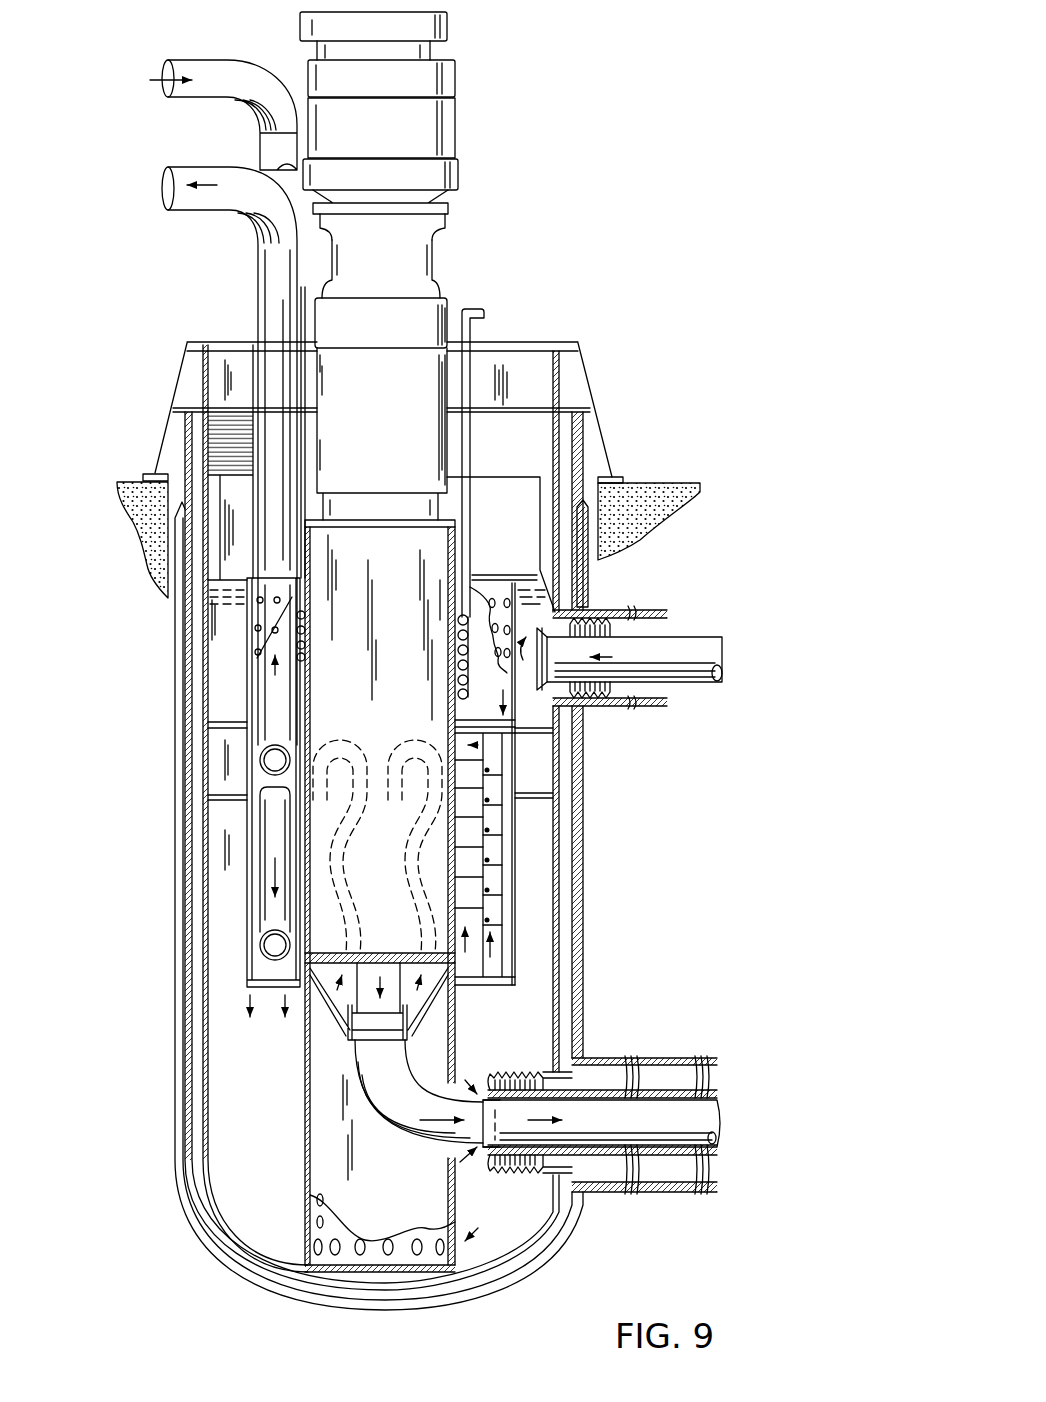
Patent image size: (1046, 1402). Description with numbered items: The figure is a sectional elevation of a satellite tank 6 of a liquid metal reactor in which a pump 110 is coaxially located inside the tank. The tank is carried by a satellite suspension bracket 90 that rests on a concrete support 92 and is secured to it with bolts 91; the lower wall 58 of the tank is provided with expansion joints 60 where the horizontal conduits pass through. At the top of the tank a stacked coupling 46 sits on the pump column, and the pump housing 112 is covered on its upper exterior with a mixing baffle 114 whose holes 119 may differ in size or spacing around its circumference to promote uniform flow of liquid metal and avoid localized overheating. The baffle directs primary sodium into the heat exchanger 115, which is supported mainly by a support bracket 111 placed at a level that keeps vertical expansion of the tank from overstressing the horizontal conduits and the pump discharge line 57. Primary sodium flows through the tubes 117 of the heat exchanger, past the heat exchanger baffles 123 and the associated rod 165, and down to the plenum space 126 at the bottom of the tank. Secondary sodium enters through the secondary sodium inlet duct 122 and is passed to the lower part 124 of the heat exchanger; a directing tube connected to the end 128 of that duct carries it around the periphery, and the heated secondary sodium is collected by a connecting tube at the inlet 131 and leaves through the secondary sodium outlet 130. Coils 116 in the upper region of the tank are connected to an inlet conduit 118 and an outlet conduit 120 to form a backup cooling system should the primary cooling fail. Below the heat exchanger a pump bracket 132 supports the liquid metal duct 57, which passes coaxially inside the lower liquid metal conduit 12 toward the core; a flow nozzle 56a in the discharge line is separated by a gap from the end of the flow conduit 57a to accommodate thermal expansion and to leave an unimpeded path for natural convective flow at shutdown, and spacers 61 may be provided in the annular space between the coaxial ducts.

The satellite tank 6 is at (508, 1244).
The lower liquid metal conduit 12 is at (655, 1090).
The coupling 46 is at (456, 80).
The flow nozzle 56a is at (480, 1148).
The liquid metal duct 57 is at (400, 1141).
The flow conduit 57a is at (718, 1142).
The lower wall 58 is at (566, 1073).
The expansion joints 60 is at (598, 622).
The spacers 61 is at (514, 1147).
The satellite suspension bracket 90 is at (174, 422).
The bolts 91 is at (152, 473).
The concrete support 92 is at (145, 530).
The pump 110 is at (440, 458).
The support bracket 111 is at (216, 800).
The pump housing 112 is at (309, 882).
The mixing baffle 114 is at (490, 600).
The heat exchanger 115 is at (516, 780).
The coils 116 is at (458, 628).
The tubes 117 is at (505, 946).
The inlet conduit 118 is at (478, 310).
The holes 119 is at (515, 600).
The outlet conduit 120 is at (320, 290).
The secondary sodium inlet duct 122 is at (205, 70).
The heat exchanger baffles 123 is at (497, 885).
The lower part of the heat exchanger 124 is at (256, 978).
The plenum space 126 is at (299, 1251).
The end of secondary sodium inlet duct 128 is at (278, 958).
The secondary sodium outlet 130 is at (184, 173).
The inlet 131 is at (272, 748).
The pump bracket 132 is at (408, 740).
The rod 165 is at (490, 838).